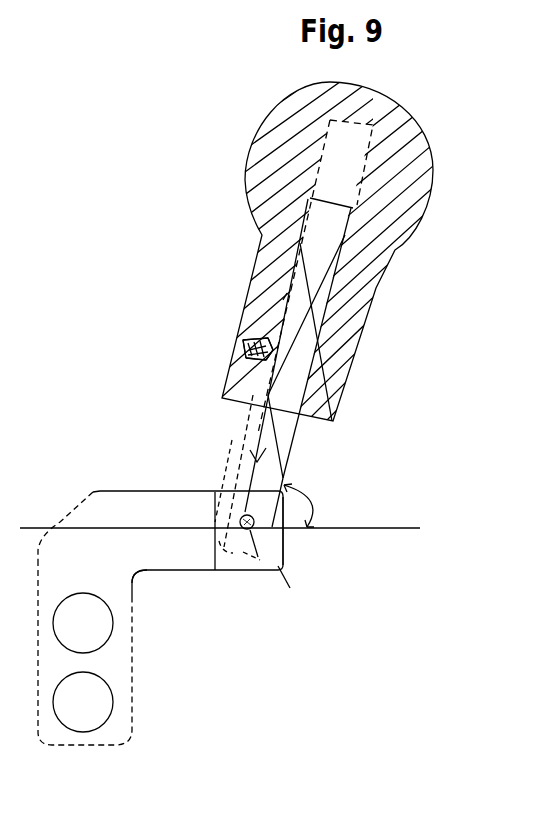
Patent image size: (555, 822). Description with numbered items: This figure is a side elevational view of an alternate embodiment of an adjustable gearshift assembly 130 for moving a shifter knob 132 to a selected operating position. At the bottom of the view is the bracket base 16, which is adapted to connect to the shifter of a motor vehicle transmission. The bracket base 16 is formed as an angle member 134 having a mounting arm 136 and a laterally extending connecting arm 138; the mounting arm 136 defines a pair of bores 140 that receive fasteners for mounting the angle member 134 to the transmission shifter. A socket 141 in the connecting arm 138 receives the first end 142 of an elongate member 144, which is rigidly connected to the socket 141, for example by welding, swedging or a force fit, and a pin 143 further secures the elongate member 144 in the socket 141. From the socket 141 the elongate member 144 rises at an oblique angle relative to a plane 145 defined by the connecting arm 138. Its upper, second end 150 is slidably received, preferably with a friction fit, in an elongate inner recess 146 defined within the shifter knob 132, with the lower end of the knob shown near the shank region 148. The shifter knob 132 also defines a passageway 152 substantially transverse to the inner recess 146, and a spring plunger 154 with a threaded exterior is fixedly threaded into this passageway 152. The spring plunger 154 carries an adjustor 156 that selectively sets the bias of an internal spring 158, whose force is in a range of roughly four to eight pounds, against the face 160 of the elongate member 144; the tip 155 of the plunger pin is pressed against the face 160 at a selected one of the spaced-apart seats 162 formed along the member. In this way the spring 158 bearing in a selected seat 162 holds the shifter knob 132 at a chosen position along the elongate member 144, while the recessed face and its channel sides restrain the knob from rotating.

The adjustable gearshift assembly 130 is at (151, 77).
The shifter knob 132 is at (427, 134).
The elongate inner recess 146 is at (347, 180).
The second end 150 is at (337, 240).
The elongate member 144 is at (283, 452).
The shank end 148 is at (301, 418).
The passageway 152 is at (240, 353).
The spring plunger 154 is at (243, 338).
The adjustor 156 is at (233, 345).
The internal spring 158 is at (237, 363).
The tip 155 is at (247, 312).
The face 160 is at (280, 337).
The seats 162 is at (275, 357).
The socket 141 is at (287, 293).
The plane 145 is at (385, 527).
The first end 142 is at (262, 535).
The pin 143 is at (255, 520).
The bracket base 16 is at (48, 500).
The connecting arm 138 is at (147, 500).
The mounting arm 136 is at (120, 663).
The angle member 134 is at (138, 573).
The bores 140 is at (100, 623).